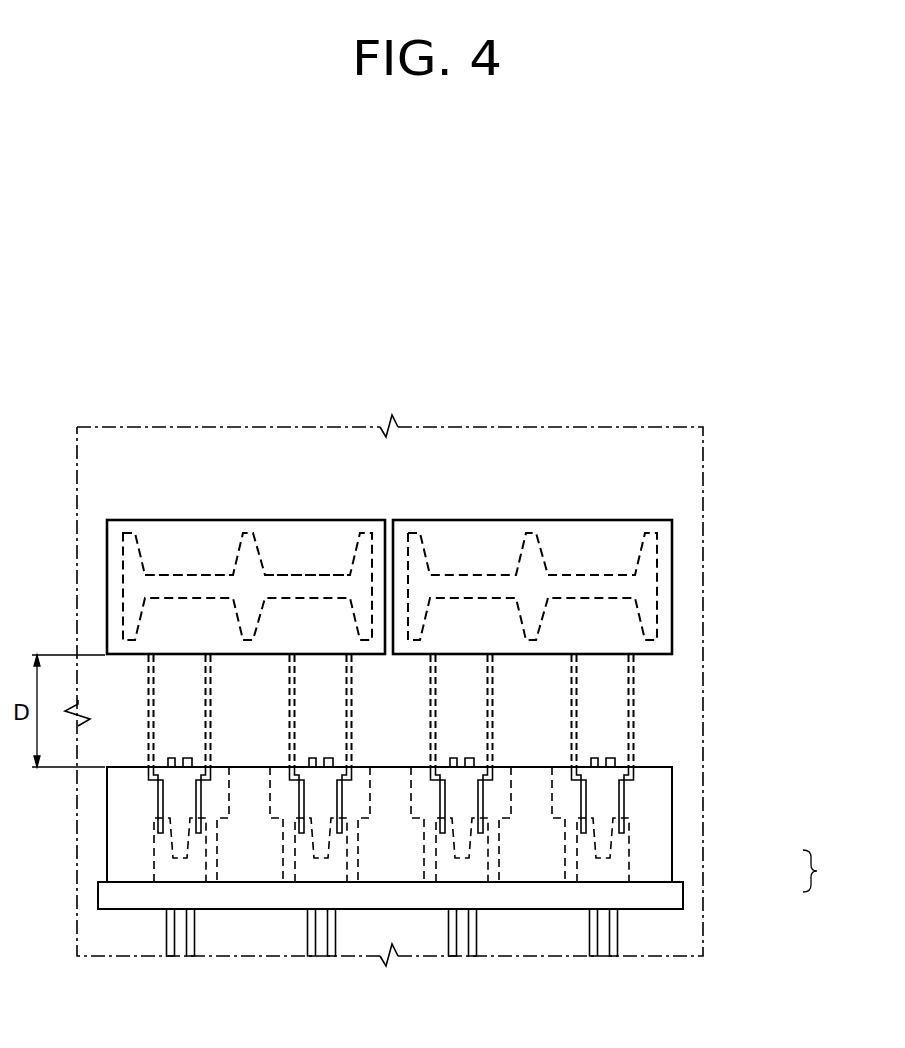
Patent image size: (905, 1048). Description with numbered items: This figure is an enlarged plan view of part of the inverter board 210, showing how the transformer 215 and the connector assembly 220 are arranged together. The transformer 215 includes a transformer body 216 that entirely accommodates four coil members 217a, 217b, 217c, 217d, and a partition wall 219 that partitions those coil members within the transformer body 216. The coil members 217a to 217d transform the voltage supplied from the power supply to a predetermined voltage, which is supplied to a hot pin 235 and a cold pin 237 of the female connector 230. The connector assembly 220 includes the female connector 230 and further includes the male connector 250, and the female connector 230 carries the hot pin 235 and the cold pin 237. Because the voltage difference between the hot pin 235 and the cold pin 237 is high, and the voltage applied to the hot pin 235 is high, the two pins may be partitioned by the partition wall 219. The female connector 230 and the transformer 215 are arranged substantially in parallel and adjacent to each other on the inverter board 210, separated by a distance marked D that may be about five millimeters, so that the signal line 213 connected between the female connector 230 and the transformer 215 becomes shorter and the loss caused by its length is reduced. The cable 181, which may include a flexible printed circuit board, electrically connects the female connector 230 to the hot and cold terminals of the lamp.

The inverter board 210 is at (118, 350).
The transformer 215 is at (672, 585).
The transformer body 216 is at (140, 520).
The coil member 217a is at (203, 575).
The coil member 217b is at (303, 575).
The coil member 217c is at (465, 575).
The coil member 217d is at (590, 575).
The partition wall 219 is at (389, 520).
The signal line 213 is at (577, 698).
The hot pin 235 is at (615, 758).
The cold pin 237 is at (621, 777).
The female connector 230 is at (672, 853).
The male connector 250 is at (683, 895).
The connector assembly 220 is at (831, 871).
The cable 181 is at (307, 940).